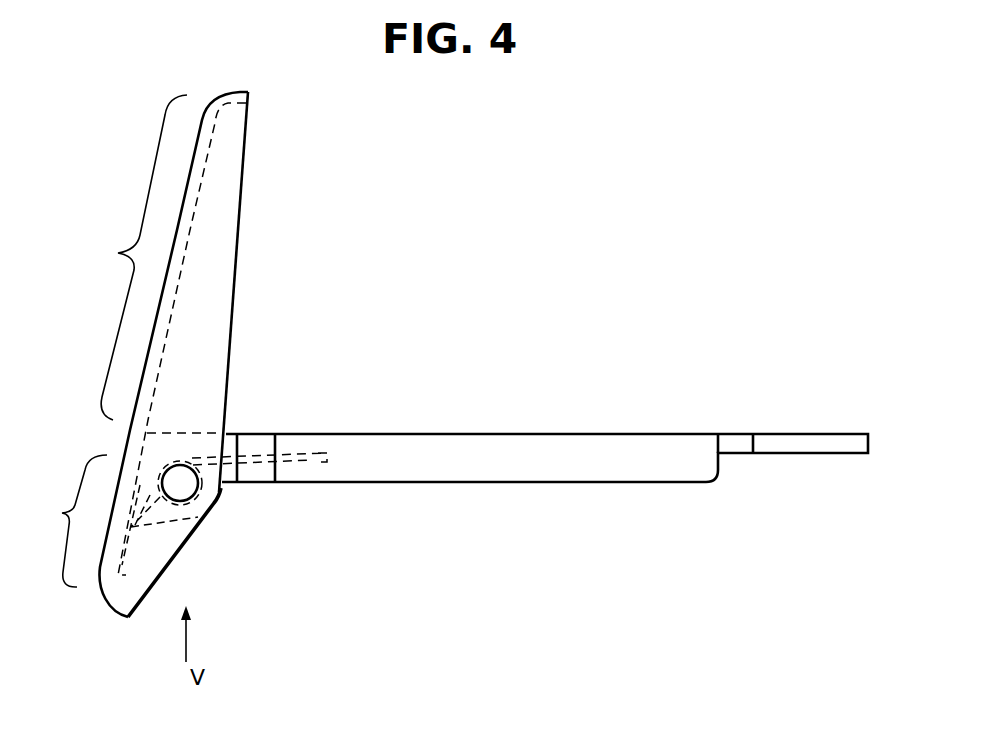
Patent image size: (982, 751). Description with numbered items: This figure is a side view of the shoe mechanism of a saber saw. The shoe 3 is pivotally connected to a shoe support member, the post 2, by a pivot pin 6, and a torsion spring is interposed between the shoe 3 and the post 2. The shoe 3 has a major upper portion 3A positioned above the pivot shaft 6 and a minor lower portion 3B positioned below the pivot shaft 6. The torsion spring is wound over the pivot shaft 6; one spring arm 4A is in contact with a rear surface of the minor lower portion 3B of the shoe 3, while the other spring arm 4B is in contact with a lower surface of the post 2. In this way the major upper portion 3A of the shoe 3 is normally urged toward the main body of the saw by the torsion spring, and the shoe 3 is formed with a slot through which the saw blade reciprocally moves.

The post 2 is at (625, 447).
The shoe 3 is at (225, 255).
The major upper portion 3A is at (134, 257).
The minor lower portion 3B is at (63, 521).
The spring arm 4A is at (128, 548).
The spring arm 4B is at (303, 463).
The pivot pin 6 is at (183, 488).